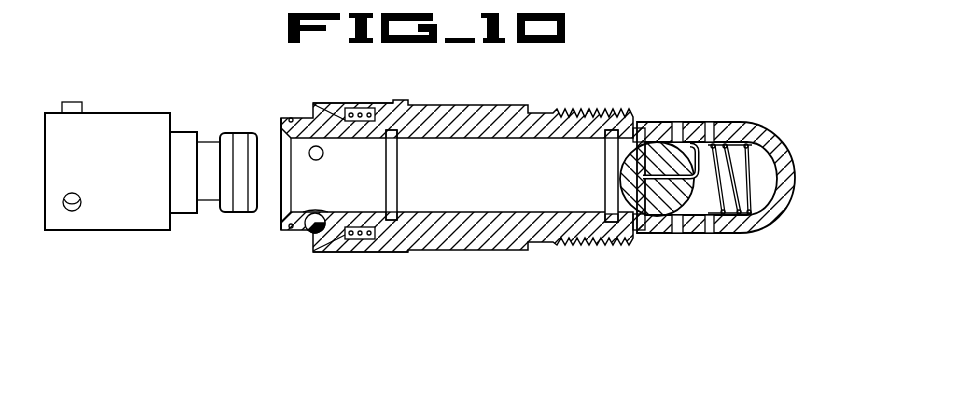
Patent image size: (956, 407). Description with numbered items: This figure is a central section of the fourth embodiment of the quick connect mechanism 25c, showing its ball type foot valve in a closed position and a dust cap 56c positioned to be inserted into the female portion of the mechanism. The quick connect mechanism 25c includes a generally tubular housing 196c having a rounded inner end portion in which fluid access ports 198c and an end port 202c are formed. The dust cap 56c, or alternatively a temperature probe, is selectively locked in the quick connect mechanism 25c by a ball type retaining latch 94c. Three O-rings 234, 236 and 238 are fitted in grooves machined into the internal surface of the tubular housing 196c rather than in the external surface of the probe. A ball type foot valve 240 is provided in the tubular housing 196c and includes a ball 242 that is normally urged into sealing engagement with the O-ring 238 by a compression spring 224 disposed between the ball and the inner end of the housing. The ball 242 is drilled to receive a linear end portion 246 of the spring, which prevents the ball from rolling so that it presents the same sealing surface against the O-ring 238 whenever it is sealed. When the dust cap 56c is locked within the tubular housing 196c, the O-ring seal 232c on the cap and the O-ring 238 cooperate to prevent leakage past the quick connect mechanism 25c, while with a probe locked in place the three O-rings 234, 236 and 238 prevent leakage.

The dust cap 56c is at (120, 118).
The O-ring seal 232c is at (240, 213).
The quick connect mechanism 25c is at (574, 82).
The ball type retaining latch 94c is at (363, 99).
The tubular housing 196c is at (468, 103).
The O-ring 234 is at (393, 140).
The O-ring 236 is at (605, 150).
The end port 202c is at (778, 160).
The fluid access ports 198c is at (677, 122).
The ball type foot valve 240 is at (660, 214).
The O-ring 238 is at (645, 212).
The ball 242 is at (651, 144).
The linear end portion 246 is at (643, 177).
The compression spring 224 is at (752, 188).